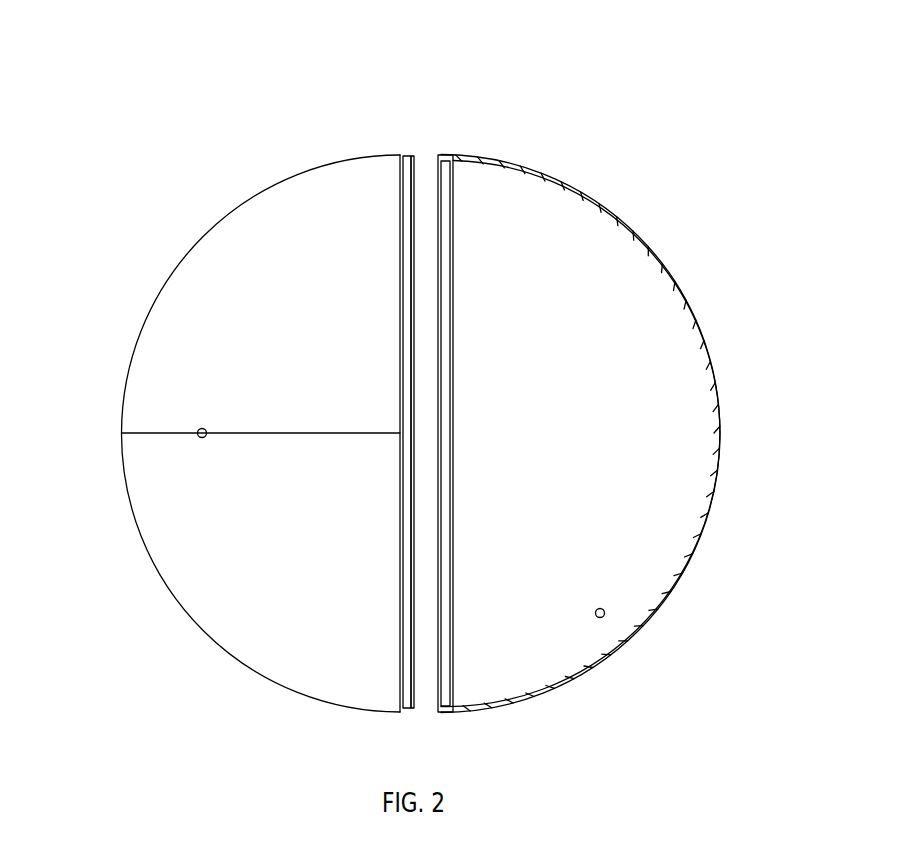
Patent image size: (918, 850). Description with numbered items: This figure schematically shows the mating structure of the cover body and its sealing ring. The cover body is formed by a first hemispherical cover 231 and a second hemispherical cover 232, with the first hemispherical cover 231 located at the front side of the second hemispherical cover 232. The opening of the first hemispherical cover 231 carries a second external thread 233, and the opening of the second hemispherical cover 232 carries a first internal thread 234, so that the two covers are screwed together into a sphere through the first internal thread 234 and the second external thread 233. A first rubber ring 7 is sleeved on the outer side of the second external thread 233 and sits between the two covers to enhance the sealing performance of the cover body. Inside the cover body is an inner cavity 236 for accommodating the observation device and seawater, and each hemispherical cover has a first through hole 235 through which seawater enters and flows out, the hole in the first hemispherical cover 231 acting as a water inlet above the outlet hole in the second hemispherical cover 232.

The first rubber ring 7 is at (445, 358).
The first hemispherical cover 231 is at (261, 399).
The second hemispherical cover 232 is at (580, 414).
The second external thread 233 is at (477, 381).
The first internal thread 234 is at (510, 461).
The first through hole 235 is at (376, 498).
The inner cavity 236 is at (685, 292).